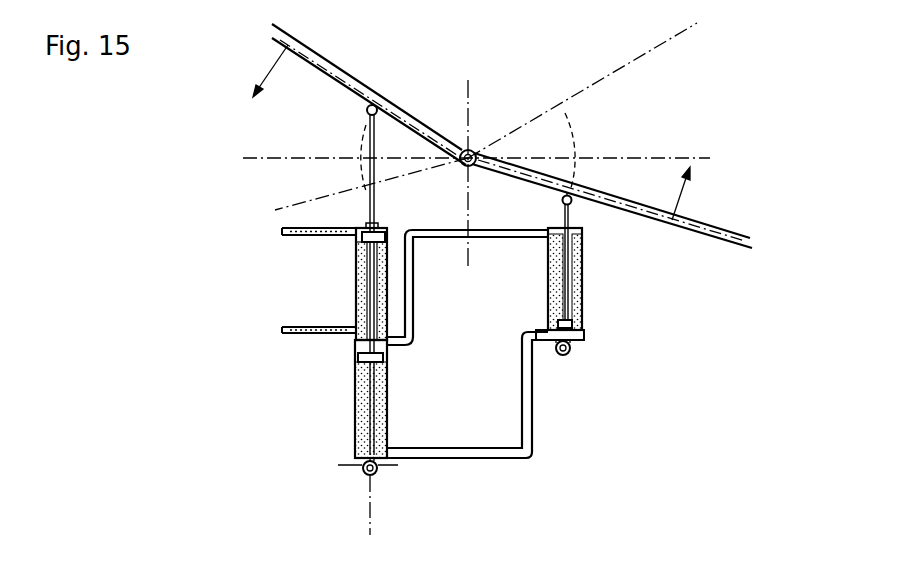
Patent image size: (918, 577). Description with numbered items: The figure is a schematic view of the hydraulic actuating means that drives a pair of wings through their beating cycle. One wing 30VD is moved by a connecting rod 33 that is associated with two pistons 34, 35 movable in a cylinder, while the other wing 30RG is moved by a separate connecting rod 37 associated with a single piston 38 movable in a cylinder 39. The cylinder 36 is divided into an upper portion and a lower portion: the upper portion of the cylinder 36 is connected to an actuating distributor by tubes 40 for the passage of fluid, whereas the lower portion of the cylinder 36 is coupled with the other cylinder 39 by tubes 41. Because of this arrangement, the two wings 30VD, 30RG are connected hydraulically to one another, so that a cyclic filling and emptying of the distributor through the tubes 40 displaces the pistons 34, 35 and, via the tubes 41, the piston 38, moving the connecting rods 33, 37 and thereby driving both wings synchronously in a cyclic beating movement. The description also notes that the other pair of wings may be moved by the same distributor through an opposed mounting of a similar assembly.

The wing 30VD is at (382, 94).
The wing 30RG is at (733, 231).
The connecting rod 33 is at (368, 154).
The piston 34 is at (365, 228).
The piston 35 is at (357, 355).
The cylinder 36 is at (355, 412).
The connecting rod 37 is at (565, 252).
The piston 38 is at (582, 334).
The cylinder 39 is at (583, 295).
The tubes 40 is at (282, 330).
The tubes 41 is at (495, 238).